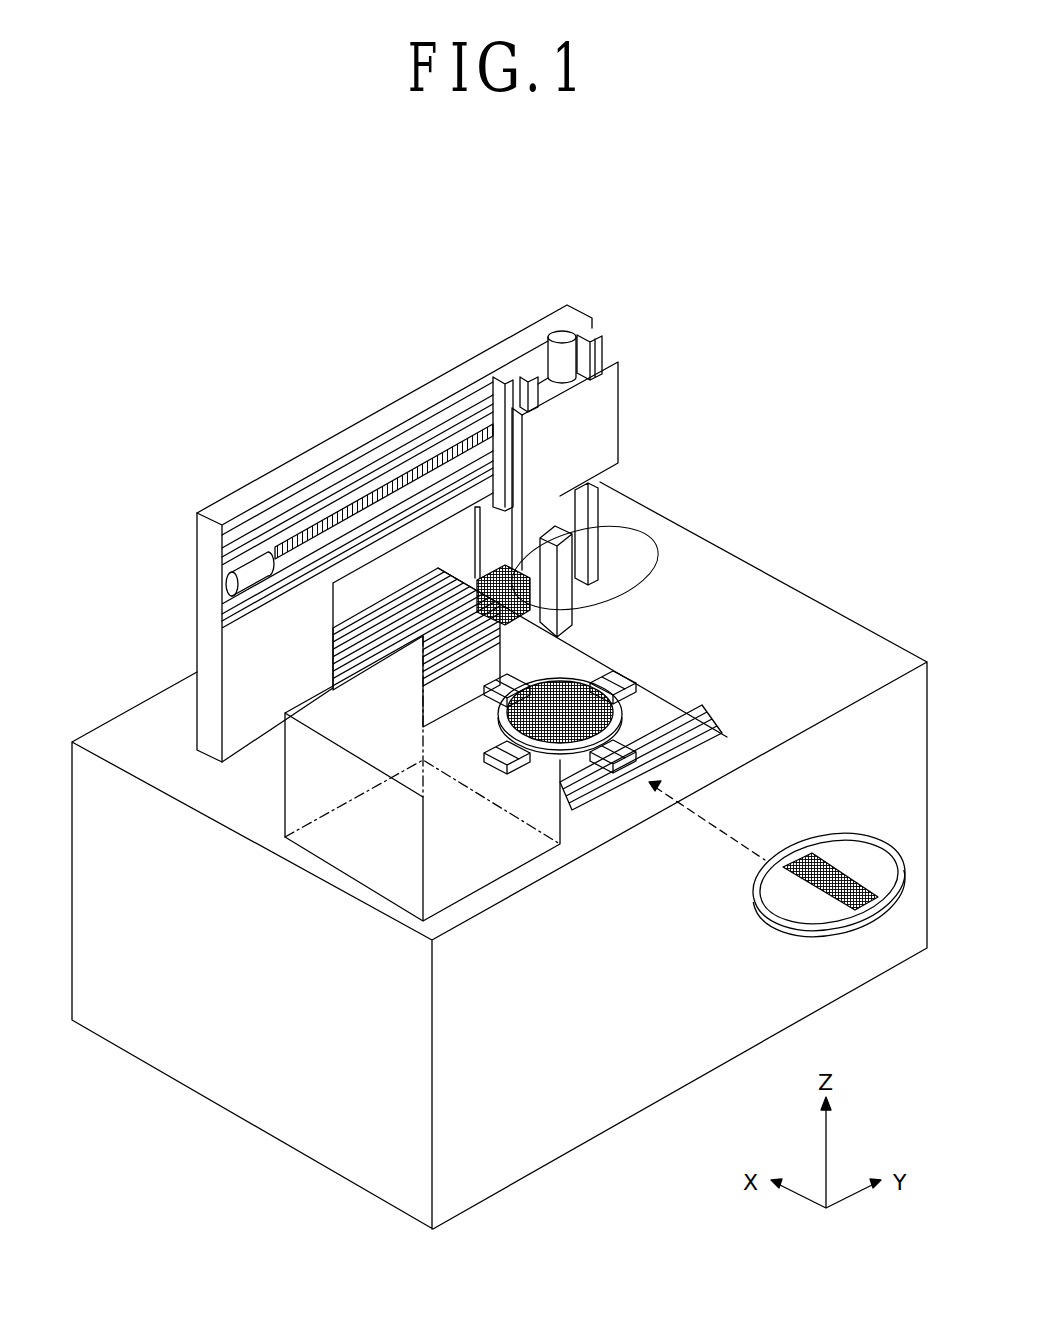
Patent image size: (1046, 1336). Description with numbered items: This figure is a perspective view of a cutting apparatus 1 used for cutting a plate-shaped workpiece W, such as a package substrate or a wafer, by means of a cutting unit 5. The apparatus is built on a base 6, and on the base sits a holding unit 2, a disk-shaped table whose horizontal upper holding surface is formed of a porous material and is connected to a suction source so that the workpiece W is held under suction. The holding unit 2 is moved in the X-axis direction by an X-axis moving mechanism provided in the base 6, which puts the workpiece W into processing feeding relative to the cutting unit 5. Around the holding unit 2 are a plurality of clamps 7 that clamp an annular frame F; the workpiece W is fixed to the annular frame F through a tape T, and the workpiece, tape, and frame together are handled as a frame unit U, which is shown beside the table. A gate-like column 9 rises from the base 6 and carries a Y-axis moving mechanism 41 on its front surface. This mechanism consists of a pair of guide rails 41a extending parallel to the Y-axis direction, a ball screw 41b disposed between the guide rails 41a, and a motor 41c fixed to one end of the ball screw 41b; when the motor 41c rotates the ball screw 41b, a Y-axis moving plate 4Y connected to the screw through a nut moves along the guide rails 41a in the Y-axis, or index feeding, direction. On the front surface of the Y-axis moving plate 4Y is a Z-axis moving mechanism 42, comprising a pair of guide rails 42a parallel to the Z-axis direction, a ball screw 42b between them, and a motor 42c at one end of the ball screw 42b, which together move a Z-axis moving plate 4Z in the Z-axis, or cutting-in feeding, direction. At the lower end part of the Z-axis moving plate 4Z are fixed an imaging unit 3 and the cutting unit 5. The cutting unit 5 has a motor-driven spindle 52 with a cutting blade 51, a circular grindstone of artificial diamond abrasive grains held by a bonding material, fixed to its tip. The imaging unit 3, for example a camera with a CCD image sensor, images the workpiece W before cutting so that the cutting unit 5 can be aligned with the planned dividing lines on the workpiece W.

The cutting apparatus 1 is at (760, 410).
The holding unit 2 is at (538, 770).
The imaging unit 3 is at (549, 515).
The Y-axis moving plate 4Y is at (530, 372).
The Z-axis moving plate 4Z is at (610, 440).
The cutting unit 5 is at (648, 516).
The base 6 is at (762, 588).
The clamps 7 is at (618, 672).
The gate-like column 9 is at (352, 448).
The Y-axis moving mechanism 41 is at (180, 502).
The guide rails 41a is at (228, 556).
The ball screw 41b is at (282, 548).
The motor 41c is at (225, 588).
The Z-axis moving mechanism 42 is at (642, 320).
The guide rails 42a is at (598, 330).
The ball screw 42b is at (578, 400).
The motor 42c is at (560, 334).
The cutting blade 51 is at (552, 603).
The spindle 52 is at (596, 522).
The workpiece W is at (801, 846).
The tape T is at (836, 857).
The frame unit U is at (866, 806).
The annular frame F is at (893, 857).